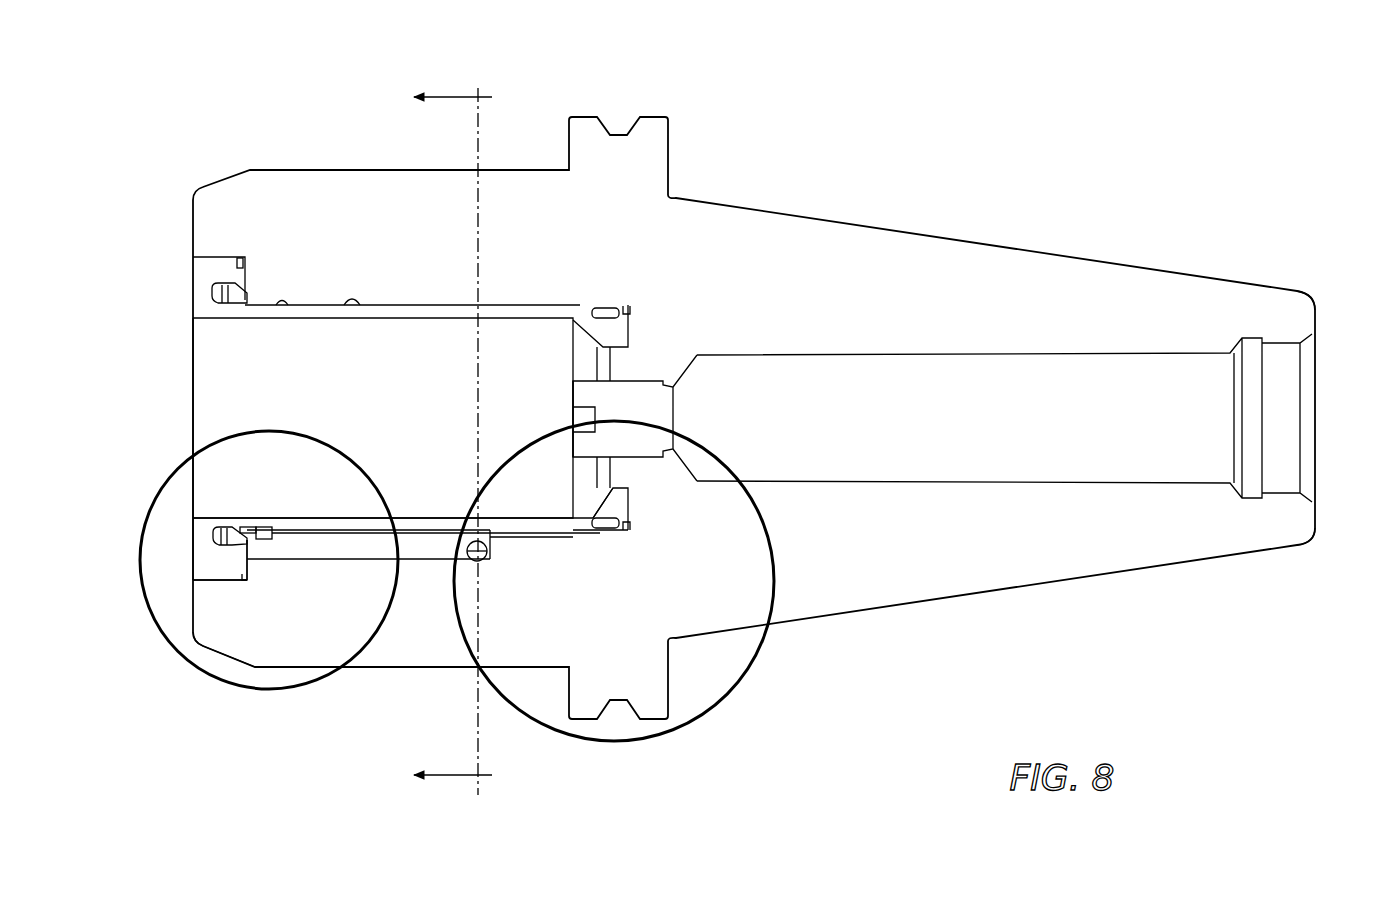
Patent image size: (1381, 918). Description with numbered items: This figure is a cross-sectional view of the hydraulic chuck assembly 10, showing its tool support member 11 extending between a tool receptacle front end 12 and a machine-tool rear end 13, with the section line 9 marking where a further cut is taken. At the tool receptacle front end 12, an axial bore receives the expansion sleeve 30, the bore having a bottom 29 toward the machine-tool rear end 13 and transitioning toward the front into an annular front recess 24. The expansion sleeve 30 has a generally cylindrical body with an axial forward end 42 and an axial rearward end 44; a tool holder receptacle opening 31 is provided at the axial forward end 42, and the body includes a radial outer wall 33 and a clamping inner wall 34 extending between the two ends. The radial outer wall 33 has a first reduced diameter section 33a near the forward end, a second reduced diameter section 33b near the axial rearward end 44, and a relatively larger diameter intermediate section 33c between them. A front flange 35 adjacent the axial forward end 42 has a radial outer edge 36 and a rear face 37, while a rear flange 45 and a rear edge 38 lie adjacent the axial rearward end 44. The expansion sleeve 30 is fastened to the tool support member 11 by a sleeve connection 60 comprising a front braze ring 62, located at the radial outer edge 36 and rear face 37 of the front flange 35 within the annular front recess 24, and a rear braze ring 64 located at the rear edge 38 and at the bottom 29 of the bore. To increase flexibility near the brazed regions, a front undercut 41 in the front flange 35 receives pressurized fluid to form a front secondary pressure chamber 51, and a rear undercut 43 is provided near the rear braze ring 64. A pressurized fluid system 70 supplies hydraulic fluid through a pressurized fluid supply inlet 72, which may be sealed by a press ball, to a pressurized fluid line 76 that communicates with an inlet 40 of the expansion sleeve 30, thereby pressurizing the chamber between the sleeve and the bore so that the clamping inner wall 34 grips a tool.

The section line 9- 9 is at (462, 441).
The hydraulic chuck assembly 10 is at (312, 688).
The tool support member 11 is at (720, 702).
The tool receptacle front end 12 is at (1322, 338).
The machine-tool rear end 13 is at (180, 338).
The annular front recess 24 is at (205, 568).
The bottom 29 is at (630, 505).
The expansion sleeve 30 is at (181, 527).
The tool holder receptacle opening 31 is at (222, 401).
The radial outer wall 33 is at (393, 298).
The first reduced diameter section 33a is at (282, 309).
The second reduced diameter section 33b is at (538, 307).
The intermediate section 33c is at (360, 309).
The clamping inner wall 34 is at (417, 517).
The front flange 35 is at (186, 545).
The radial outer edge 36 is at (220, 587).
The rear face 37 is at (250, 573).
The rear edge 38 is at (632, 505).
The inlet 40 is at (268, 527).
The front undercut 41 is at (242, 525).
The axial forward end 42 is at (188, 294).
The rear undercut 43 is at (595, 520).
The axial rearward end 44 is at (640, 313).
The rear flange 45 is at (642, 490).
The front secondary pressure chamber 51 is at (228, 527).
The sleeve connection 60 is at (236, 262).
The front braze ring 62 is at (253, 582).
The rear braze ring 64 is at (630, 500).
The pressurized fluid system 70 is at (425, 563).
The pressurized fluid supply inlet 72 is at (487, 555).
The pressurized fluid line 76 is at (318, 545).